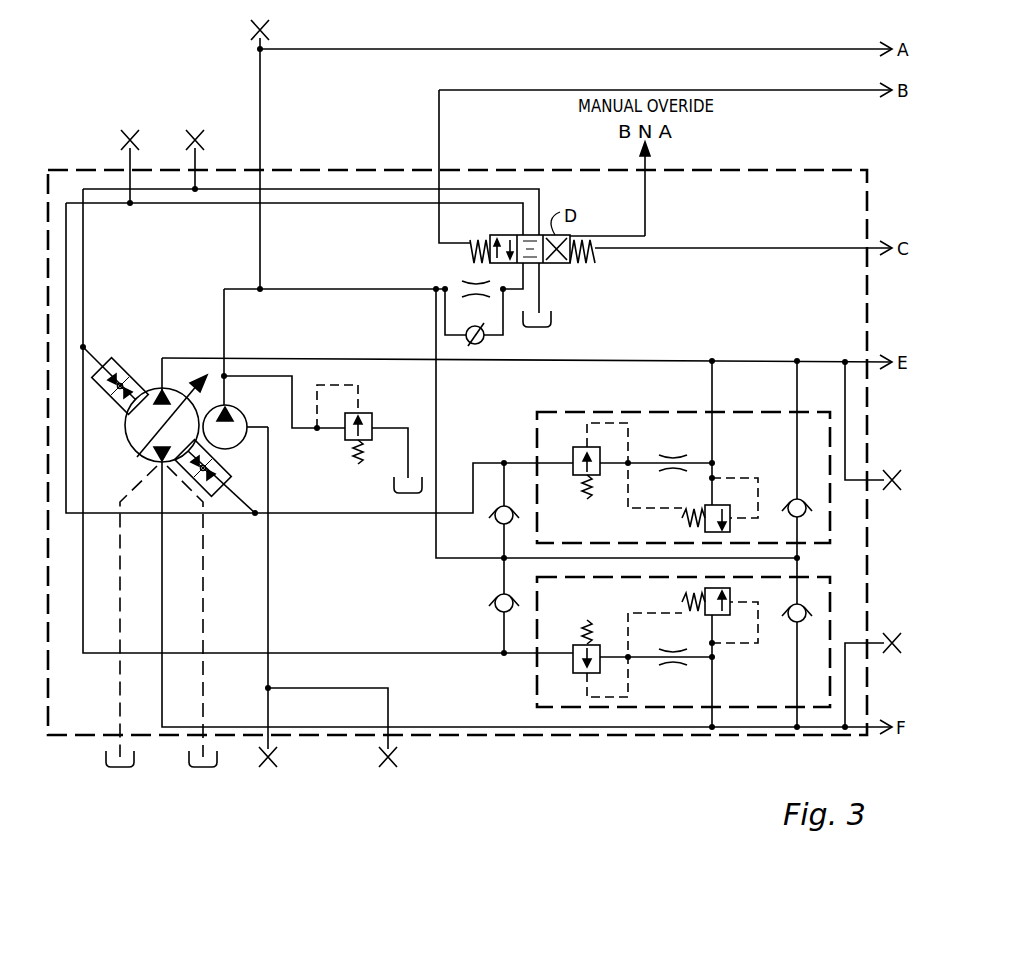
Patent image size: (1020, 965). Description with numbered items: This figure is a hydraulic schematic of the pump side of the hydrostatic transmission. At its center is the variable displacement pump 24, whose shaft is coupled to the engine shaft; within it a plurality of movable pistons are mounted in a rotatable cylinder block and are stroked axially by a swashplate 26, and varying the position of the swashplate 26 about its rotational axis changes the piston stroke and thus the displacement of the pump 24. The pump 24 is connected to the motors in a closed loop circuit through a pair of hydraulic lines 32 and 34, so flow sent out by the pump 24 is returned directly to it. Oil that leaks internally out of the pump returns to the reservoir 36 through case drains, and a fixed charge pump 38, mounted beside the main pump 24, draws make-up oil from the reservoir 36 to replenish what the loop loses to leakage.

The variable displacement pump 24 is at (150, 390).
The swashplate 26 is at (150, 455).
The hydraulic line 32 is at (821, 362).
The hydraulic line 34 is at (820, 727).
The reservoir 36 is at (551, 327).
The charge pump 38 is at (236, 412).